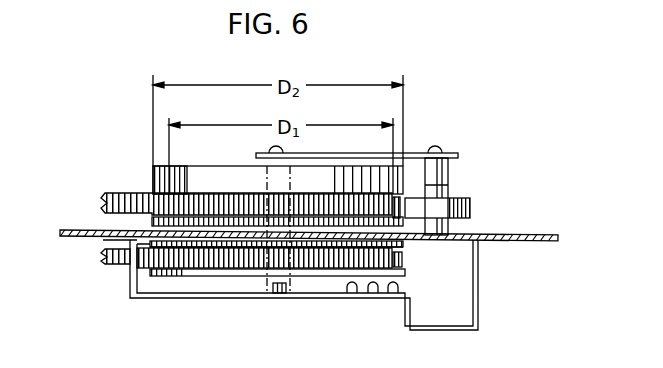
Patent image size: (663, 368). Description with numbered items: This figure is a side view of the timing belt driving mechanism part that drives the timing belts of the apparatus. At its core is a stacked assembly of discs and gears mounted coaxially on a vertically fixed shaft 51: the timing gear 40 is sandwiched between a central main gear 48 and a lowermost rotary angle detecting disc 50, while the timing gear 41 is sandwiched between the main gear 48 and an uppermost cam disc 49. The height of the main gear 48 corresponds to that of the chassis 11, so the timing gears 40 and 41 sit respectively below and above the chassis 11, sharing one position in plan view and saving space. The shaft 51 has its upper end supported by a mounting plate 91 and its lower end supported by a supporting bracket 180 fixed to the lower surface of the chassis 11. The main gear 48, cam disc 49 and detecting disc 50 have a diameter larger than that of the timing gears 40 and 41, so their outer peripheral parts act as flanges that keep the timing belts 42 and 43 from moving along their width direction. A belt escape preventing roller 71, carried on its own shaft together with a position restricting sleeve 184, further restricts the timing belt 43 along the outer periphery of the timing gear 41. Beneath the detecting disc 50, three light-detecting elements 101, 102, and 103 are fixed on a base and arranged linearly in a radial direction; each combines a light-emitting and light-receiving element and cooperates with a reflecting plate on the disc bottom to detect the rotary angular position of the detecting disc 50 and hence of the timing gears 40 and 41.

The chassis 11 is at (531, 234).
The timing gear 40 is at (303, 268).
The timing gear 41 is at (198, 191).
The timing belt 42 is at (117, 266).
The timing belt 43 is at (121, 193).
The main gear 48 is at (152, 225).
The cam disc 49 is at (227, 176).
The rotary angle detecting disc 50 is at (172, 277).
The shaft 51 is at (268, 283).
The belt escape preventing roller 71 is at (472, 208).
The mounting plate 91 is at (412, 153).
The light-detecting element 101 is at (352, 292).
The light-detecting element 102 is at (372, 292).
The light-detecting element 103 is at (393, 294).
The supporting bracket 180 is at (203, 298).
The position restricting sleeve 184 is at (448, 172).